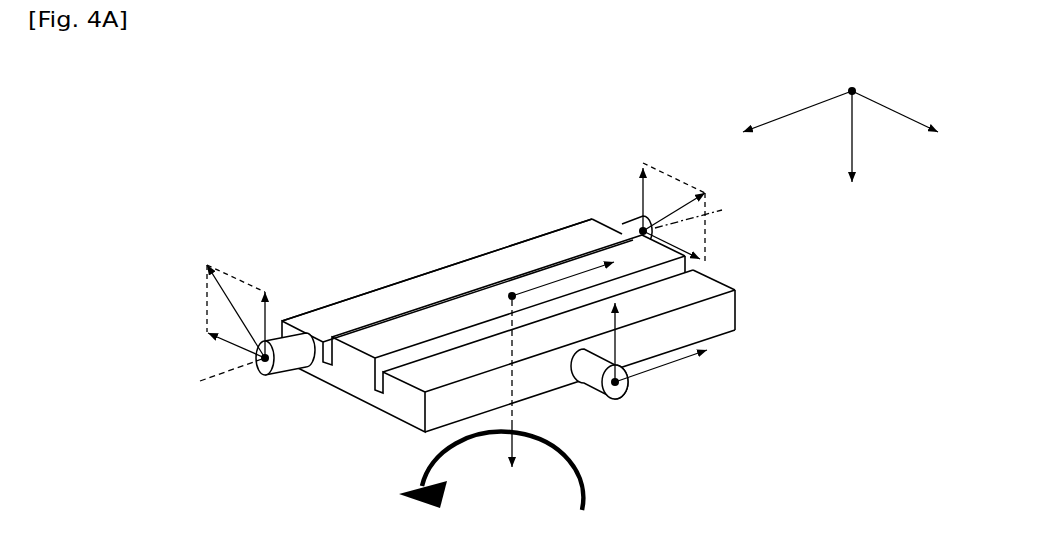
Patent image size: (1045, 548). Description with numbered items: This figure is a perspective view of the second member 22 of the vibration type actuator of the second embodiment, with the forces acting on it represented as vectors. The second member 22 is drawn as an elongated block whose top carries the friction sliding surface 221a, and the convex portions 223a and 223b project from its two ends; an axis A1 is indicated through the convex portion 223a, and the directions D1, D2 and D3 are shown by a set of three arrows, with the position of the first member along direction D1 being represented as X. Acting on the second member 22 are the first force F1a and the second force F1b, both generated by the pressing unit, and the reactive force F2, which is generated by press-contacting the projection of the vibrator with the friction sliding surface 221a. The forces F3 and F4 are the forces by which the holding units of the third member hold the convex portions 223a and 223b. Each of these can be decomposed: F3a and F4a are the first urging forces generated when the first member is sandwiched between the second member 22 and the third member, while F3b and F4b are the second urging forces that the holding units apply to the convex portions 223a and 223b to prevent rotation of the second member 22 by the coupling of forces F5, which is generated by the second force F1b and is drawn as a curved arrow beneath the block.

The second member 22 is at (287, 148).
The friction sliding surface 221a is at (445, 267).
The convex portion 223a is at (283, 376).
The convex portion 223b is at (622, 222).
The rotation axis A1 is at (214, 380).
The position in direction D1 X is at (576, 269).
The first force F1a is at (643, 340).
The second force F1b is at (673, 373).
The reactive force F2 is at (510, 401).
The force F3 is at (221, 293).
The first urging force F3a is at (278, 307).
The second urging force F3b is at (207, 337).
The force F4 is at (692, 204).
The first urging force F4a is at (647, 204).
The second urging force F4b is at (700, 252).
The coupling of forces F5 is at (519, 471).
The direction D1 is at (799, 105).
The second direction D2 is at (877, 138).
The third direction D3 is at (895, 104).